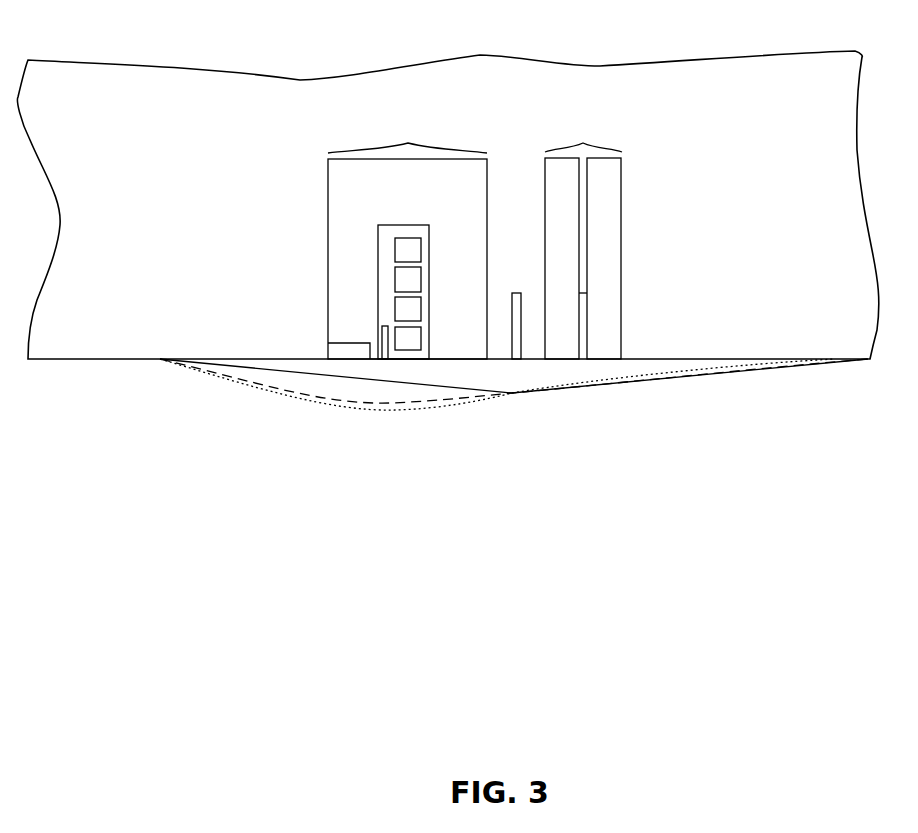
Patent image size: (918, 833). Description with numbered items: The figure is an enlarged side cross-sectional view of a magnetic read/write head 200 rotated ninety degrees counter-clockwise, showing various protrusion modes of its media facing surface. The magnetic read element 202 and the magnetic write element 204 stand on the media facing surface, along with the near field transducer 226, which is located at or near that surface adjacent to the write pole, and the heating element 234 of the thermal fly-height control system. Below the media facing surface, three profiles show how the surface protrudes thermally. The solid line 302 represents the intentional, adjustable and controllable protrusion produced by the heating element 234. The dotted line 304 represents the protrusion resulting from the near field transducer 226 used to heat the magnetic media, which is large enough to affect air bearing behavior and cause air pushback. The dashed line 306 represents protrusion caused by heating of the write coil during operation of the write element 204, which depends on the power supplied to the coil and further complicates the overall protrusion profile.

The magnetic read/write head 200 is at (448, 61).
The magnetic read element 202 is at (575, 149).
The magnetic write element 204 is at (370, 149).
The near field transducer 226 is at (380, 340).
The heating element 234 is at (516, 293).
The solid line 302 is at (652, 383).
The dotted line 304 is at (408, 410).
The dashed line 306 is at (337, 400).